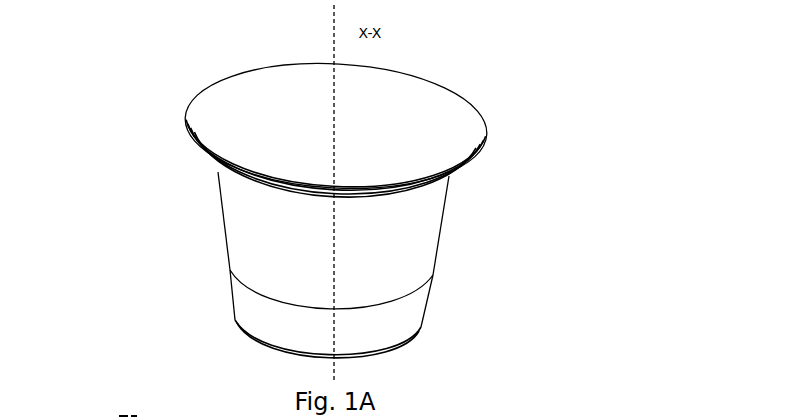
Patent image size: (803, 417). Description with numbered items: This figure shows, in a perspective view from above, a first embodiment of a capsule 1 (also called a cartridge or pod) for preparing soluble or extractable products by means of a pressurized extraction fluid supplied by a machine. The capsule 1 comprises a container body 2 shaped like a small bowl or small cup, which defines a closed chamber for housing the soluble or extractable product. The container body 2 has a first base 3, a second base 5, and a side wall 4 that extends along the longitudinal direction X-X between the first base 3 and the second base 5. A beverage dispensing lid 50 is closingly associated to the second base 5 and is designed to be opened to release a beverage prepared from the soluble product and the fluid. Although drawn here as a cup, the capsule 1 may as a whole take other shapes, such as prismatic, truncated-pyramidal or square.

The capsule 1 is at (381, 195).
The container body 2 is at (450, 222).
The first base 3 is at (394, 350).
The side wall 4 is at (436, 276).
The second base 5 is at (478, 96).
The beverage dispensing lid 50 is at (239, 149).